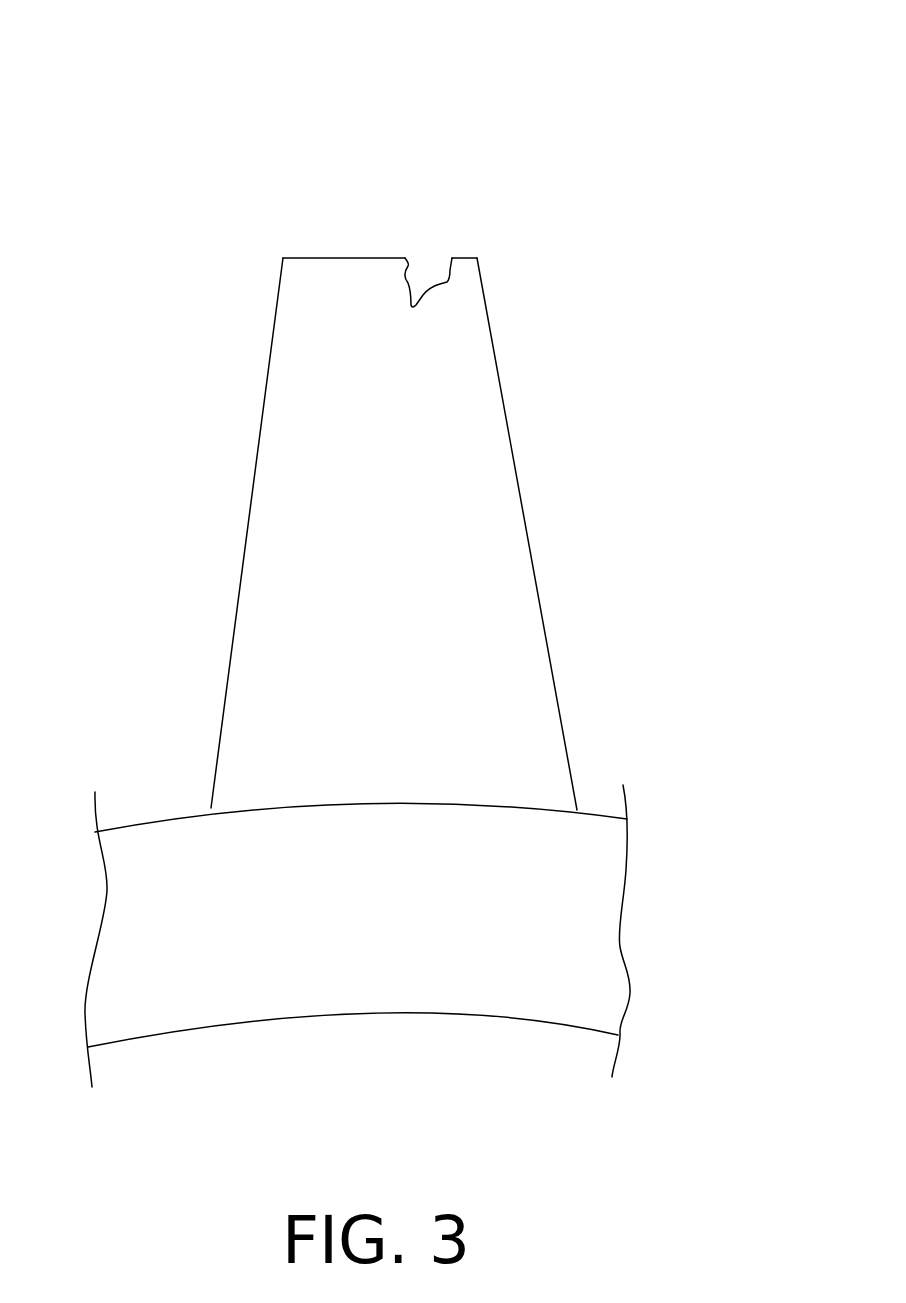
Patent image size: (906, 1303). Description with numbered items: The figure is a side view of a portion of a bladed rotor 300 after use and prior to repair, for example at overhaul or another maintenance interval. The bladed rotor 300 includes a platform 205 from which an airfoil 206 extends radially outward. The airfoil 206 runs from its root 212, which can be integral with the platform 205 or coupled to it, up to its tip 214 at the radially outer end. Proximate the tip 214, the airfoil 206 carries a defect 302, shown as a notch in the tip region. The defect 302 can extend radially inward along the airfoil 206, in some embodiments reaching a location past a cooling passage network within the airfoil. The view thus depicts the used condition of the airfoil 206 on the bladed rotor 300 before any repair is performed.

The bladed rotor 300 is at (161, 108).
The airfoil 206 is at (183, 328).
The tip 214 is at (335, 257).
The defect 302 is at (417, 278).
The platform 205 is at (193, 878).
The root 212 is at (457, 802).